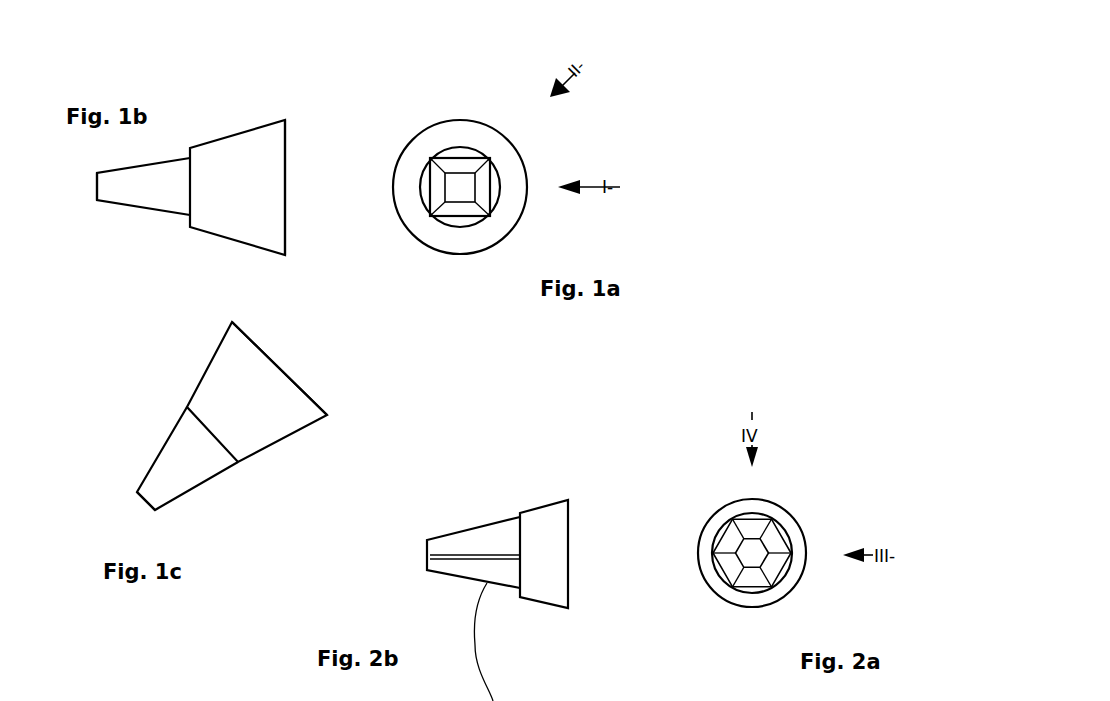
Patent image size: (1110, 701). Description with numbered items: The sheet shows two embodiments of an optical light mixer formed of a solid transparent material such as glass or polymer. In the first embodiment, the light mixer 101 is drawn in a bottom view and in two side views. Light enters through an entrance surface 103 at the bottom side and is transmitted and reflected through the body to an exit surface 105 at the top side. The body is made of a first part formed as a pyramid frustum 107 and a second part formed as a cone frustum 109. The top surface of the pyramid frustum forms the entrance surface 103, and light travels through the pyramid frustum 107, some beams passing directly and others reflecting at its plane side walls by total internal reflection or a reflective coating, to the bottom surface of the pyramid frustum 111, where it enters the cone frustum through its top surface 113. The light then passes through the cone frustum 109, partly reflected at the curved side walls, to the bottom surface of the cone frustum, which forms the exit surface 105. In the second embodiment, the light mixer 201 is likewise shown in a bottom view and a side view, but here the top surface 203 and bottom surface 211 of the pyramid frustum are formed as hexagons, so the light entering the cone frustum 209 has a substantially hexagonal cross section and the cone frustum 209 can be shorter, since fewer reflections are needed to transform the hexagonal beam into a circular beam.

In FIG. 1B, the optical light mixer 101 is at (243, 68).
In FIG. 1B, the entrance surface 103 is at (97, 198).
In FIG. 1C, the entrance surface 103 is at (135, 498).
In FIG. 1A, the entrance surface 103 is at (455, 190).
In FIG. 1B, the exit surface 105 is at (285, 215).
In FIG. 1C, the exit surface 105 is at (278, 367).
In FIG. 1B, the pyramid frustum 107 is at (125, 183).
In FIG. 1C, the pyramid frustum 107 is at (165, 440).
In FIG. 1A, the pyramid frustum 107 is at (480, 193).
In FIG. 1B, the cone frustum 109 is at (260, 215).
In FIG. 1C, the cone frustum 109 is at (245, 355).
In FIG. 1A, the cone frustum 109 is at (507, 175).
In FIG. 1A, the bottom surface of the pyramid frustum 111 is at (455, 158).
In FIG. 1A, the top surface of the cone frustum 113 is at (477, 148).
In FIG. 2A, the optical light mixer 201 is at (654, 448).
In FIG. 2A, the top surface of the pyramid frustum 203 is at (765, 547).
In FIG. 2A, the cone frustum 209 is at (752, 553).
In FIG. 2B, the cone frustum 209 is at (553, 585).
In FIG. 2A, the bottom surface of the pyramid frustum 211 is at (755, 518).